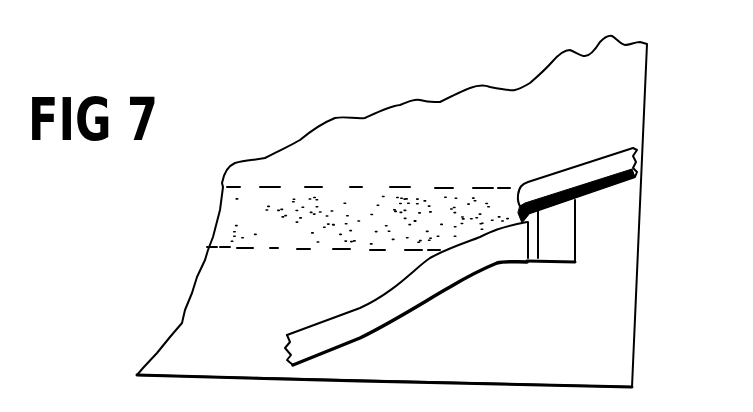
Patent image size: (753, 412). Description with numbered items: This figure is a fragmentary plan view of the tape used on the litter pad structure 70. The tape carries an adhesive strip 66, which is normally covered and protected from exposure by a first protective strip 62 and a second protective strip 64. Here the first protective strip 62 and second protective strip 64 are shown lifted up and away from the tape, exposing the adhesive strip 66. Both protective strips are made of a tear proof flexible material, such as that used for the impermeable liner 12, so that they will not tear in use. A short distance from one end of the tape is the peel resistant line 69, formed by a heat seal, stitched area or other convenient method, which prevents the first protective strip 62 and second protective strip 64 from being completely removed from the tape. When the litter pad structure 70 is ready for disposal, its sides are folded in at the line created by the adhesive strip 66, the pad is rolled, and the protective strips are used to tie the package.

The litter pad structure 70 is at (378, 84).
The impermeable liner 12 is at (538, 111).
The first protective strip 62 is at (572, 175).
The second protective strip 64 is at (418, 295).
The adhesive strip 66 is at (348, 190).
The peel resistant line 69 is at (533, 253).